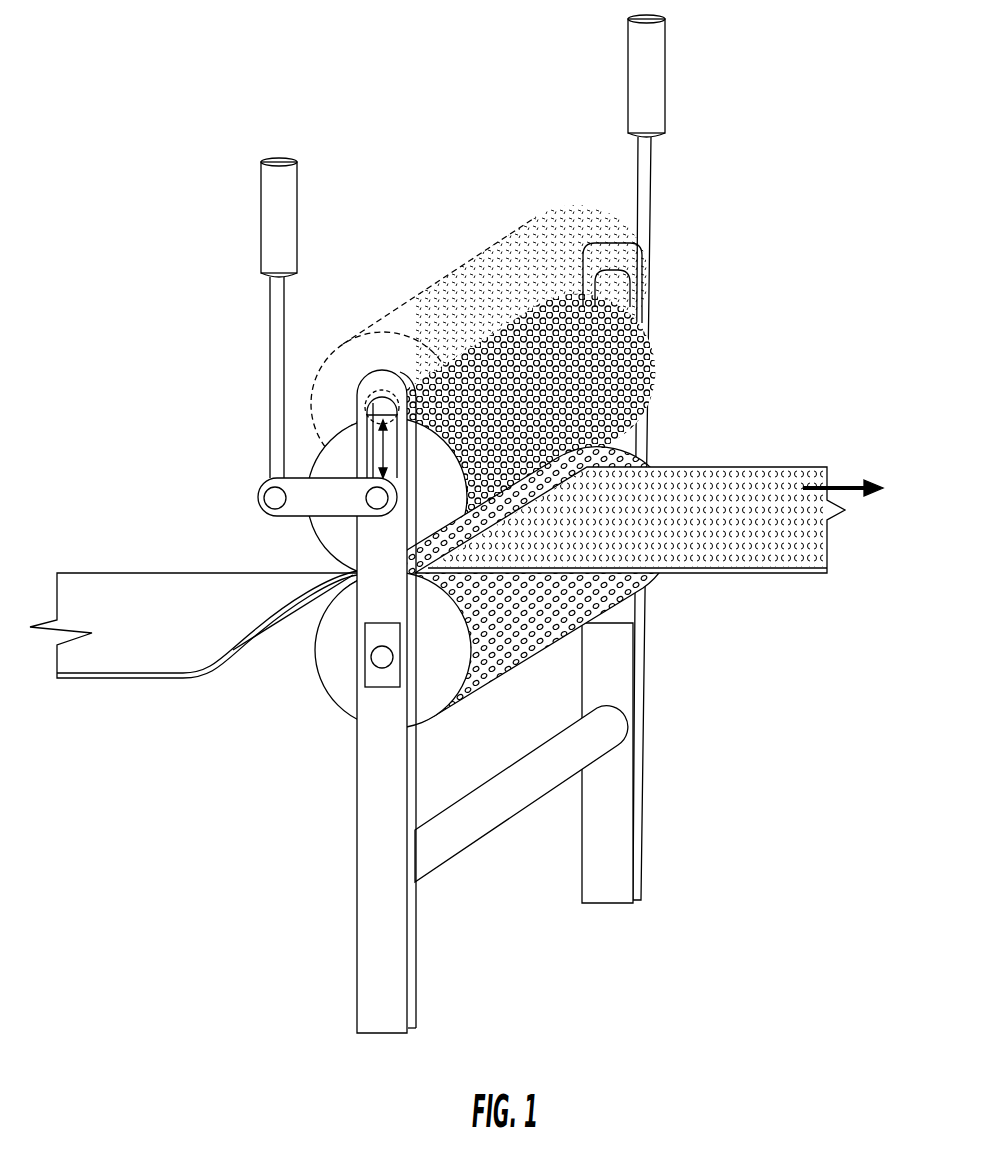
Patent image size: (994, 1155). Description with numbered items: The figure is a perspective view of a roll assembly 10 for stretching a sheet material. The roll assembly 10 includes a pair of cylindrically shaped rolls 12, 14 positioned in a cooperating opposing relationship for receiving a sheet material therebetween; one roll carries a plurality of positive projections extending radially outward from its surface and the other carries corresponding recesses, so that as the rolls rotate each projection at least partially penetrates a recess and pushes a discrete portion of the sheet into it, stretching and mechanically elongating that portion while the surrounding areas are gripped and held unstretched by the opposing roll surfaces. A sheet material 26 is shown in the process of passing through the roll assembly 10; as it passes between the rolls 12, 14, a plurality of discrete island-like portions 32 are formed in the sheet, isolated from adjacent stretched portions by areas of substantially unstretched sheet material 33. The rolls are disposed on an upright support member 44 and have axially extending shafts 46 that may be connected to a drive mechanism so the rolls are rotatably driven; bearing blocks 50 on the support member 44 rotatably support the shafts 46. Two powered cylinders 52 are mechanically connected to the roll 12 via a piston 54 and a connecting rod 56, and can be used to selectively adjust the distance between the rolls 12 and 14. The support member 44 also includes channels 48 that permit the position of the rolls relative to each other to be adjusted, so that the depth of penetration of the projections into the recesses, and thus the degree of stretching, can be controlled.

The roll assembly 10 is at (692, 405).
The roll 12 is at (652, 363).
The roll 14 is at (648, 582).
The sheet material 26 is at (783, 467).
The island-like portions 32 is at (715, 482).
The substantially unstretched sheet material 33 is at (755, 500).
The upright support member 44 is at (642, 727).
The axially extending shafts 46 is at (377, 498).
The channels 48 is at (372, 445).
The bearing blocks 50 is at (365, 687).
The powered cylinders 52 is at (663, 110).
The piston 54 is at (283, 347).
The connecting rod 56 is at (303, 504).